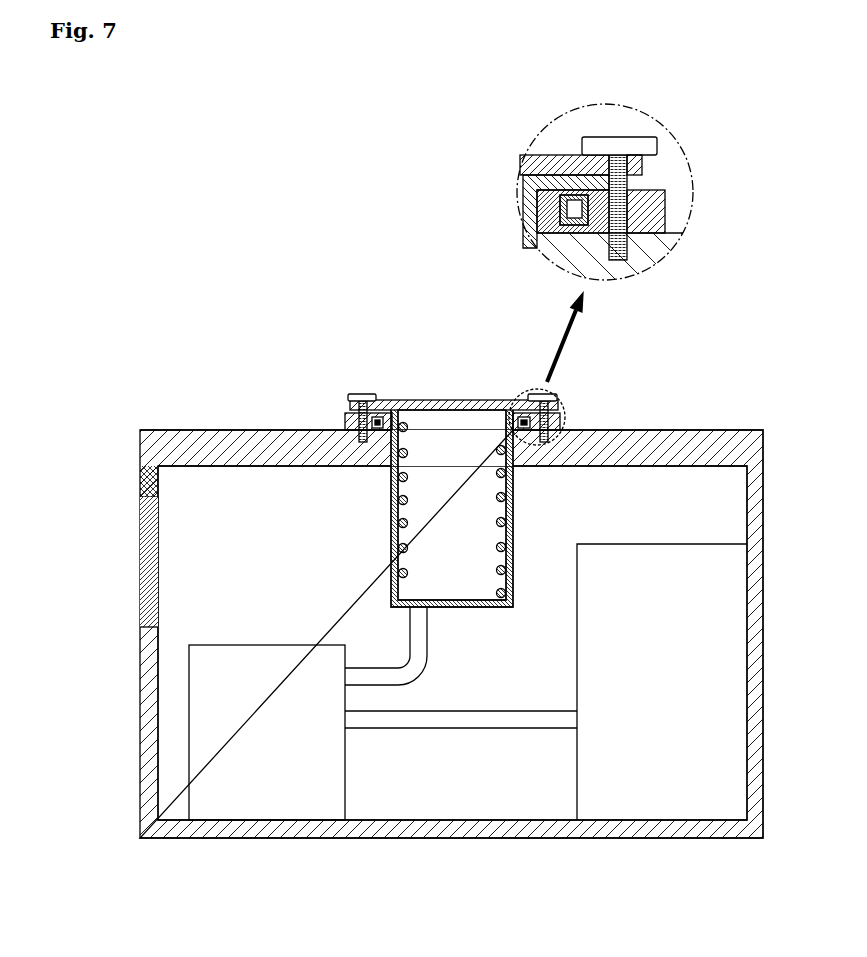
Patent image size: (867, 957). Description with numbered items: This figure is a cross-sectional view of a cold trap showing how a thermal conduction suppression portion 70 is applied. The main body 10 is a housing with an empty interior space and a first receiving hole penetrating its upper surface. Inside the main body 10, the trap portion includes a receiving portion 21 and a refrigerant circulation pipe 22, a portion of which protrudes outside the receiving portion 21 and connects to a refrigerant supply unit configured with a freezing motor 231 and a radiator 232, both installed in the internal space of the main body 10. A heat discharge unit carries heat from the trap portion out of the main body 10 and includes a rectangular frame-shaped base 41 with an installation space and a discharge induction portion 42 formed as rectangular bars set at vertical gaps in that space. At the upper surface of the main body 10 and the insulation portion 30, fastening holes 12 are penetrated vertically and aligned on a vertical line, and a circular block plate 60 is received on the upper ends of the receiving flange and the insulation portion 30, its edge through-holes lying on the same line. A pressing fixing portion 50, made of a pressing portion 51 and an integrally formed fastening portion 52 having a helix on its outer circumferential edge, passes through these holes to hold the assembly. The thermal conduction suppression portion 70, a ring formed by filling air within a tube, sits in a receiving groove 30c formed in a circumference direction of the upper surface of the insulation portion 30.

The main body 10 is at (178, 430).
The fastening hole 12 is at (587, 257).
The receiving portion 21 is at (517, 505).
The refrigerant circulation pipe 22 is at (415, 398).
The insulation portion 30 is at (573, 399).
The receiving groove 30c is at (560, 238).
The base 41 is at (140, 498).
The discharge induction portion 42 is at (140, 578).
The pressing fixing portion 50 is at (504, 253).
The pressing portion 51 is at (363, 394).
The fastening portion 52 is at (347, 411).
The block plate 60 is at (493, 399).
The thermal conduction suppression portion 70 is at (537, 210).
The freezing motor 231 is at (268, 796).
The radiator 232 is at (672, 796).